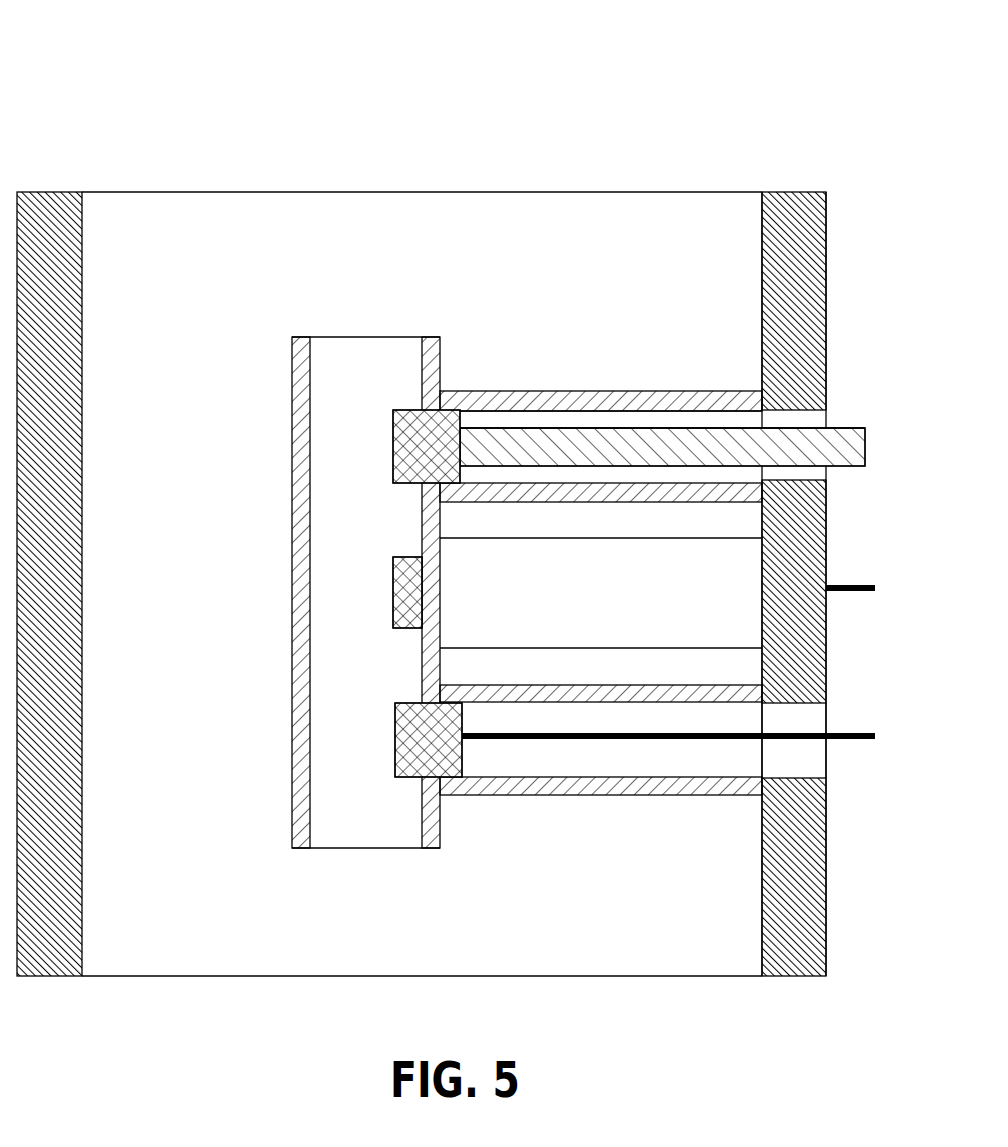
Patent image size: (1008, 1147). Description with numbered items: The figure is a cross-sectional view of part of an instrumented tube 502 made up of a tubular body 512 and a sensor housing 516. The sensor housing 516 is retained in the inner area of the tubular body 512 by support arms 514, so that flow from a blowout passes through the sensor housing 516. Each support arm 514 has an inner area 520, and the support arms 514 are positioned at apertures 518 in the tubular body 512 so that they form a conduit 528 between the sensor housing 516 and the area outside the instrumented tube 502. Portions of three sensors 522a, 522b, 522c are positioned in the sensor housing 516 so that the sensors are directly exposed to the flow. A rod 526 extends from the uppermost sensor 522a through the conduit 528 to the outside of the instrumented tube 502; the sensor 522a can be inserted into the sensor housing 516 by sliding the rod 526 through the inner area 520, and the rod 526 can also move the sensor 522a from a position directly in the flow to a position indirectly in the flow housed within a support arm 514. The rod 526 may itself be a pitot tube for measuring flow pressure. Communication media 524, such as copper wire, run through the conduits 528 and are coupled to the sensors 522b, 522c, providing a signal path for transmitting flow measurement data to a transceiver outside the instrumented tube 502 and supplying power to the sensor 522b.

The instrumented tube 502 is at (122, 82).
The tubular body 512 is at (83, 318).
The support arms 514 is at (475, 392).
The sensor housing 516 is at (366, 337).
The apertures 518 is at (818, 421).
The inner area 520 is at (585, 420).
The sensor 522a is at (392, 442).
The sensor 522b is at (393, 580).
The sensor 522c is at (394, 738).
The communication media 524 is at (835, 584).
The rod 526 is at (652, 428).
The conduit 528 is at (751, 750).